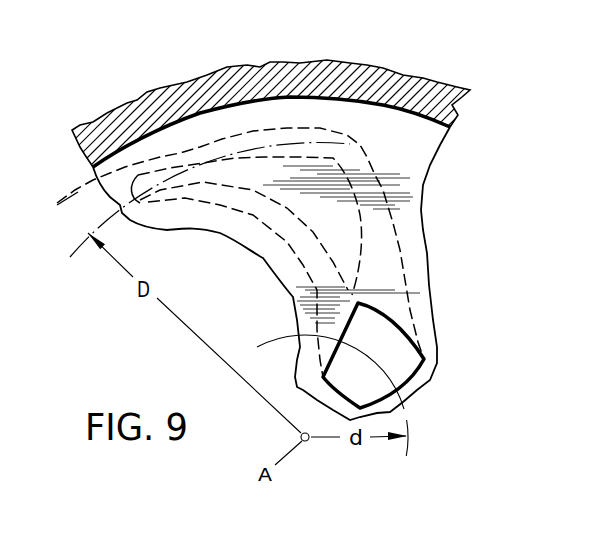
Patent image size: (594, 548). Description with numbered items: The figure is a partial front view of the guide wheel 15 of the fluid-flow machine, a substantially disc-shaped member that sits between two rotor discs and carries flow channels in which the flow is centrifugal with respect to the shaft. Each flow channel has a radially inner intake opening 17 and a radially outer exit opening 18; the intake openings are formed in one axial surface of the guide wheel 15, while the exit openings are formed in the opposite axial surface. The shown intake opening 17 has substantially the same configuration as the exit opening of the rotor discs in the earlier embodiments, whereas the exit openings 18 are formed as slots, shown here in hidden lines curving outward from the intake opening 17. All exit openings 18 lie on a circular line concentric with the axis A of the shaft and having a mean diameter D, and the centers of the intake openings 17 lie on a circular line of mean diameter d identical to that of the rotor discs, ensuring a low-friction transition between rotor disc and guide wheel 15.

The guide wheel 15 is at (430, 232).
The intake opening 17 is at (398, 358).
The exit opening 18 is at (227, 242).